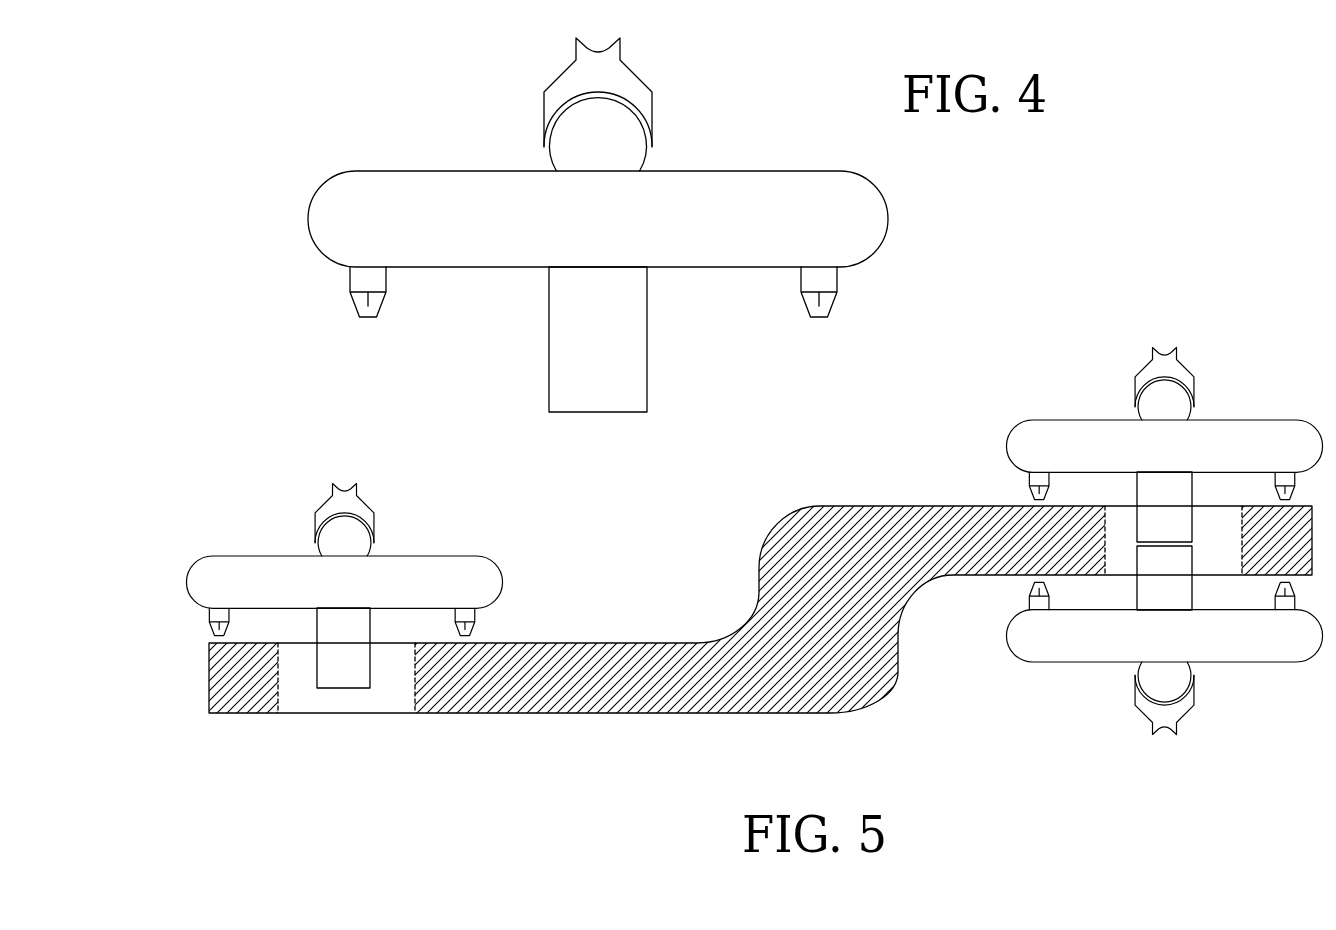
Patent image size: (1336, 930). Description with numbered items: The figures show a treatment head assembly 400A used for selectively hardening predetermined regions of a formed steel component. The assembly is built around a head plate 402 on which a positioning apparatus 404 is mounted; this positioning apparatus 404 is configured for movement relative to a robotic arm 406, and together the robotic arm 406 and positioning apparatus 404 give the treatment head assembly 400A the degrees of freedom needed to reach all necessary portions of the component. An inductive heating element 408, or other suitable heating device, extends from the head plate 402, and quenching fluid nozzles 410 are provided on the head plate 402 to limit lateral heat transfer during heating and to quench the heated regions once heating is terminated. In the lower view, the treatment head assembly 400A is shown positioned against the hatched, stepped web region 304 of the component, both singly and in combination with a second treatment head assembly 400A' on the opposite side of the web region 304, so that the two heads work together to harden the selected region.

In FIG. 4, the treatment head assembly 400A is at (589, 206).
In FIG. 5, the treatment head assembly 400A is at (740, 518).
In FIG. 4, the head plate 402 is at (437, 202).
In FIG. 4, the positioning apparatus 404 is at (559, 104).
In FIG. 4, the robotic arm 406 is at (641, 80).
In FIG. 4, the inductive heating element 408 is at (596, 339).
In FIG. 4, the quenching fluid nozzles 410 is at (837, 278).
In FIG. 5, the web region 304 is at (803, 607).
In FIG. 5, the second treatment head assembly 400A' is at (1114, 640).